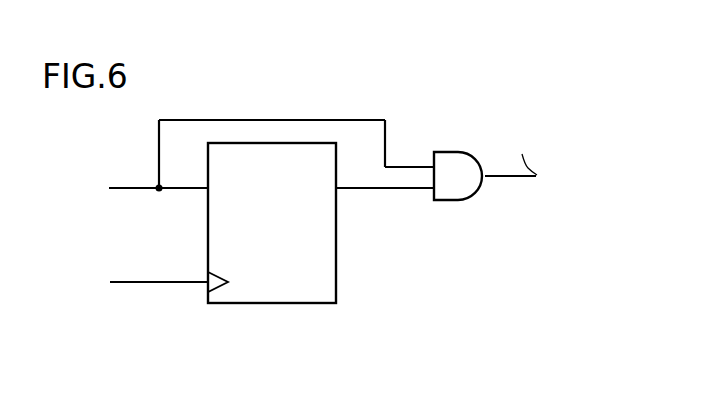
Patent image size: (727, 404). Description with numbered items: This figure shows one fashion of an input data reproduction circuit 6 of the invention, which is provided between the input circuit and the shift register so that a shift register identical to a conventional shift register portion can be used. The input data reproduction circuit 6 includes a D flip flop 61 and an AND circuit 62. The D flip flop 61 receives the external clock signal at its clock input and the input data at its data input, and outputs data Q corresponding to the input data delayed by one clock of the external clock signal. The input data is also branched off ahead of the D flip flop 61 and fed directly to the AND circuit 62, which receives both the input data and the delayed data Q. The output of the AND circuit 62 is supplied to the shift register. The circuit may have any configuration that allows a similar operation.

The input data reproduction circuit 6 is at (333, 246).
The D flip flop 61 is at (336, 282).
The AND circuit 62 is at (453, 201).